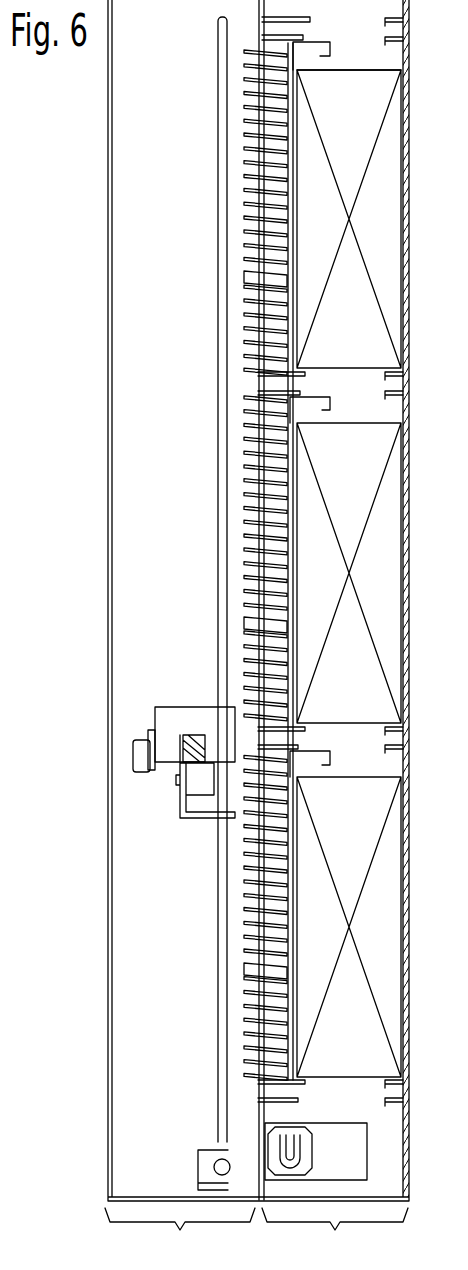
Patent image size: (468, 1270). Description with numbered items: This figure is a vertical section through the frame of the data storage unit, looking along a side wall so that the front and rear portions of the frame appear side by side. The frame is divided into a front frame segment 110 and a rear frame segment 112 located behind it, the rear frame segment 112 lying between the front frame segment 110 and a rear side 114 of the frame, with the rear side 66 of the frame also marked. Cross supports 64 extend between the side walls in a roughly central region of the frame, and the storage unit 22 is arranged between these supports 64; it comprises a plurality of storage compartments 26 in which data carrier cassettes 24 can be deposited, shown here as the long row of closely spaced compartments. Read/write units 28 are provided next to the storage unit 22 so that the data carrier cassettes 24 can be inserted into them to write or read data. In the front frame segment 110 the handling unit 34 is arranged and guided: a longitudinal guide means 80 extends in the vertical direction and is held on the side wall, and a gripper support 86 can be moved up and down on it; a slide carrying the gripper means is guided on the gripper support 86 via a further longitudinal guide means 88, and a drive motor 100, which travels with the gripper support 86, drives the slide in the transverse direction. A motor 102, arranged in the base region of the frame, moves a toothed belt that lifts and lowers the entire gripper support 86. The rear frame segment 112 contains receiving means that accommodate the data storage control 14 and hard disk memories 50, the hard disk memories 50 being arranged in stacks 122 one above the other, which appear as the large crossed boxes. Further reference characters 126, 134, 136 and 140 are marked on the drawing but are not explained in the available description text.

The data storage control 14 is at (358, 679).
The storage unit 22 is at (248, 920).
The data carrier cassettes 24 is at (246, 969).
The storage compartments 26 is at (246, 996).
The read/write units 28 is at (312, 62).
The handling unit 34 is at (138, 719).
The hard disk memories 50 is at (12, 532).
The cross supports 64 is at (262, 27).
The rear side 66 is at (0, 86).
The longitudinal guide means 80 is at (218, 180).
The gripper support 86 is at (180, 800).
The longitudinal guide means 88 is at (195, 738).
The drive motor 100 is at (138, 752).
The motor 102 is at (300, 1125).
The front frame segment 110 is at (180, 1236).
The rear frame segment 112 is at (335, 1236).
The rear side 114 is at (0, 390).
The stacks 122 is at (365, 342).
The guide 126 is at (0, 515).
The support 134 is at (17, 527).
The support 136 is at (0, 572).
The base 140 is at (0, 1078).